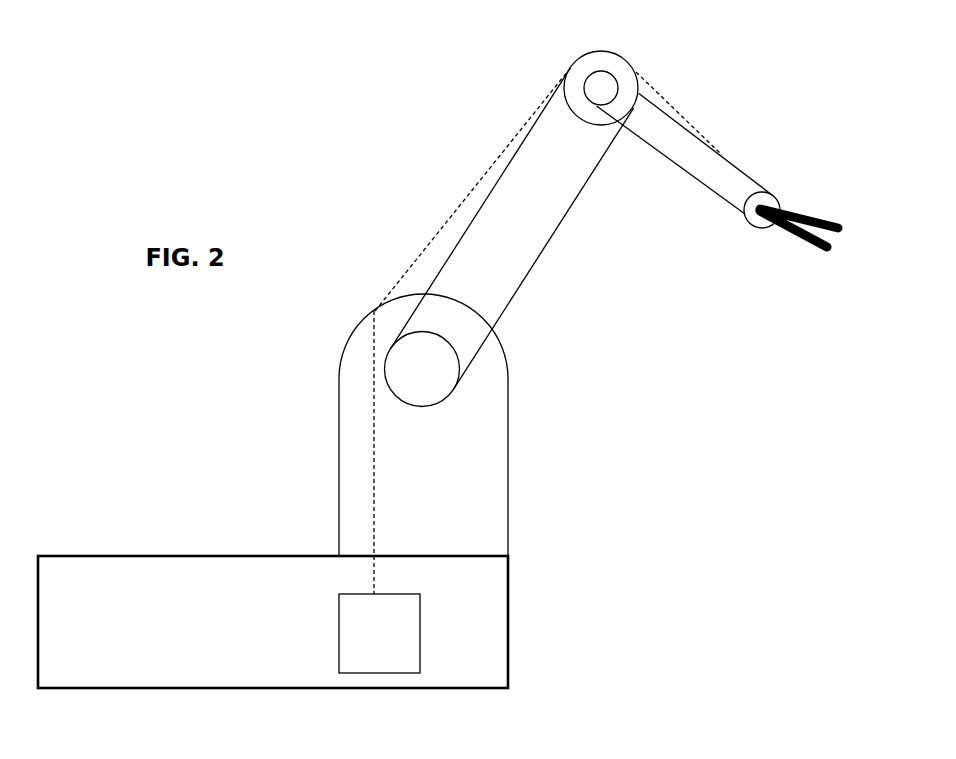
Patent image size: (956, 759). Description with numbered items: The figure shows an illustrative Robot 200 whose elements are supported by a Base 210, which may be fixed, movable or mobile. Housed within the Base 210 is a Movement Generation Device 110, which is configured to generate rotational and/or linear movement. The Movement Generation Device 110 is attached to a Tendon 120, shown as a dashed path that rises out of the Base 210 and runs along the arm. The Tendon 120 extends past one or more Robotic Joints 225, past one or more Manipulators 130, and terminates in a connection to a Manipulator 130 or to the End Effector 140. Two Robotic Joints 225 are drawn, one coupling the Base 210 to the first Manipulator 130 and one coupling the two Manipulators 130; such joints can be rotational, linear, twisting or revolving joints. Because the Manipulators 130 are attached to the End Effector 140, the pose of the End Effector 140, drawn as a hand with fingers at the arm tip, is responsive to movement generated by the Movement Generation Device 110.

The movement generation device 110 is at (360, 647).
The tendon 120 is at (453, 213).
The manipulator 130 is at (576, 201).
The end effector 140 is at (817, 218).
The robot 200 is at (184, 482).
The base 210 is at (254, 648).
The robotic joint 225 is at (610, 71).